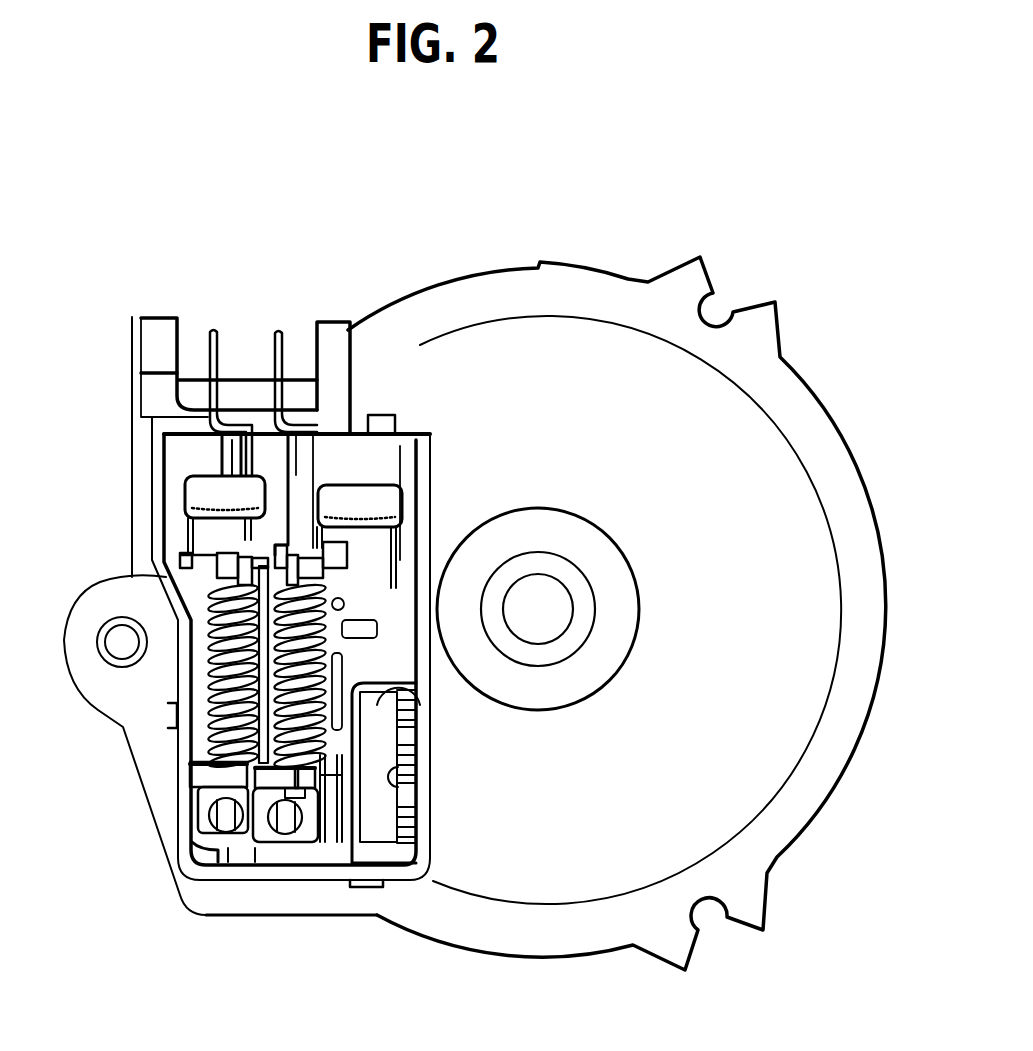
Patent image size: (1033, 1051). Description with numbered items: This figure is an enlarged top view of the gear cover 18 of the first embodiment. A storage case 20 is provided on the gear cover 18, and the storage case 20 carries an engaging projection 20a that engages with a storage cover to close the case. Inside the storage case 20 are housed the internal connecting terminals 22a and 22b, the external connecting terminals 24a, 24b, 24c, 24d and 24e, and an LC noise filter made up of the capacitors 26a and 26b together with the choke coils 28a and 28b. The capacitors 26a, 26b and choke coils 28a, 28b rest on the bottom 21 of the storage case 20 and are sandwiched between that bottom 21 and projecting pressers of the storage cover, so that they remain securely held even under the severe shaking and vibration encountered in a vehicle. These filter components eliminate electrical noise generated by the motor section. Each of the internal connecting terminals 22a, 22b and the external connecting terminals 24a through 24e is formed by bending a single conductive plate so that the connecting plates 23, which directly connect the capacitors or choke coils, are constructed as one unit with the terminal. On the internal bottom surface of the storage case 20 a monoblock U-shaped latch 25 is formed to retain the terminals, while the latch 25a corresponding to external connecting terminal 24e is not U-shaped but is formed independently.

The gear cover 18 is at (617, 258).
The storage case 20 is at (310, 865).
The engaging projection 20a is at (376, 413).
The bottom 21 is at (168, 588).
The internal connecting terminal 22a is at (208, 336).
The internal connecting terminal 22b is at (268, 337).
The connecting plates 23 is at (296, 380).
The external connecting terminal 24a is at (343, 863).
The external connecting terminal 24b is at (321, 863).
The external connecting terminal 24c is at (420, 823).
The external connecting terminal 24d is at (418, 760).
The external connecting terminal 24e is at (417, 710).
The latch 25 is at (418, 768).
The latch 25a is at (420, 674).
The capacitor 26a is at (200, 492).
The capacitor 26b is at (398, 485).
The choke coil 28a is at (205, 735).
The choke coil 28b is at (200, 773).